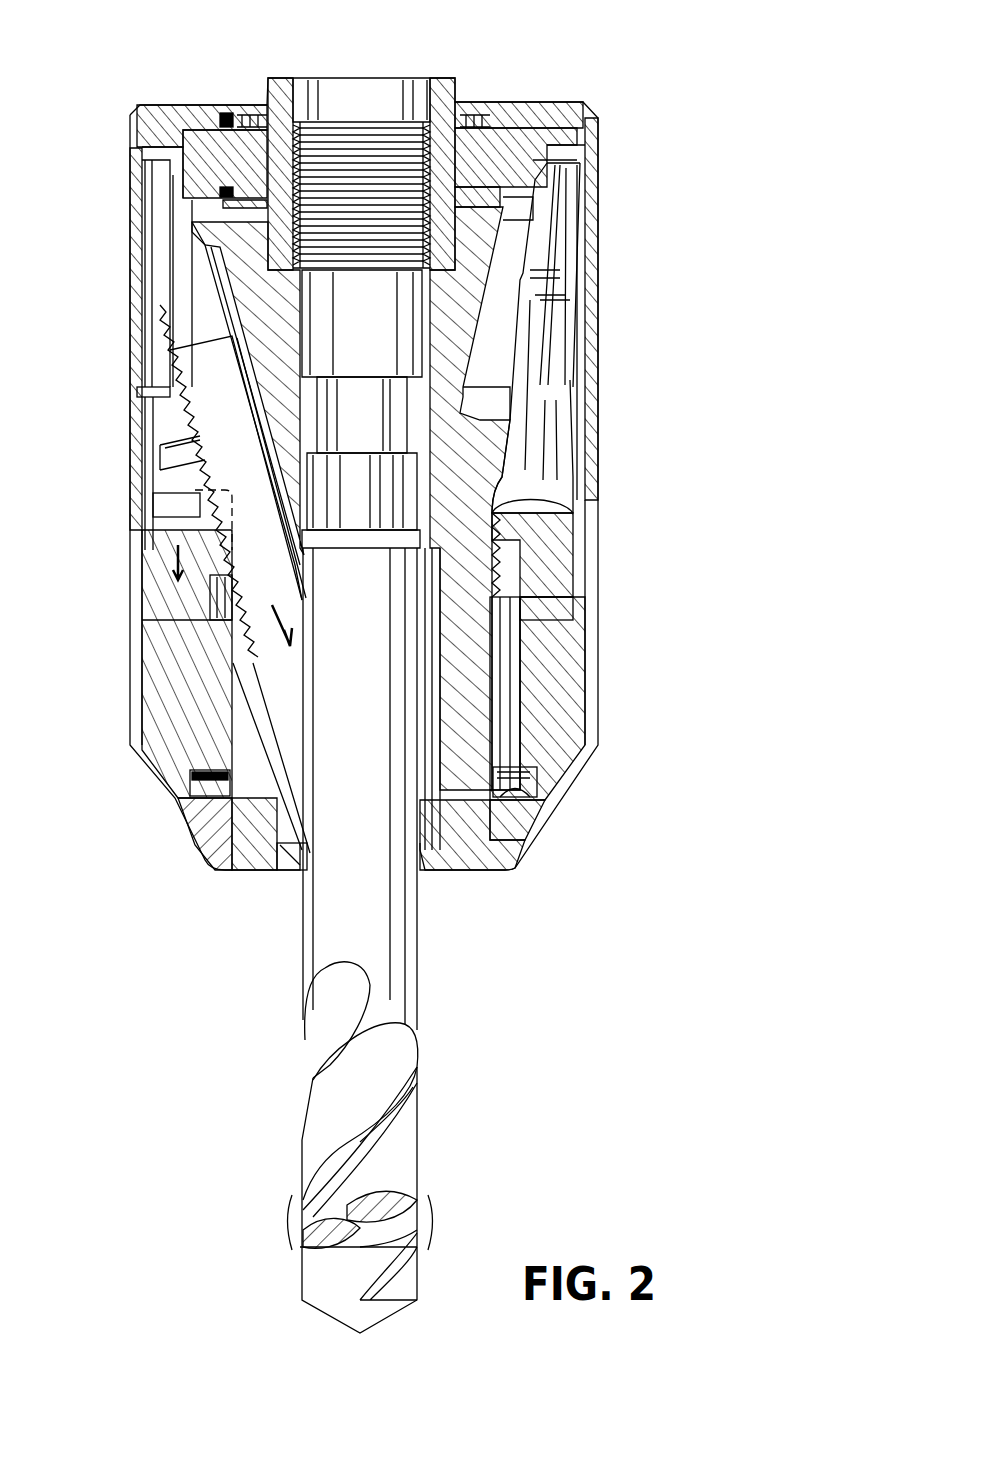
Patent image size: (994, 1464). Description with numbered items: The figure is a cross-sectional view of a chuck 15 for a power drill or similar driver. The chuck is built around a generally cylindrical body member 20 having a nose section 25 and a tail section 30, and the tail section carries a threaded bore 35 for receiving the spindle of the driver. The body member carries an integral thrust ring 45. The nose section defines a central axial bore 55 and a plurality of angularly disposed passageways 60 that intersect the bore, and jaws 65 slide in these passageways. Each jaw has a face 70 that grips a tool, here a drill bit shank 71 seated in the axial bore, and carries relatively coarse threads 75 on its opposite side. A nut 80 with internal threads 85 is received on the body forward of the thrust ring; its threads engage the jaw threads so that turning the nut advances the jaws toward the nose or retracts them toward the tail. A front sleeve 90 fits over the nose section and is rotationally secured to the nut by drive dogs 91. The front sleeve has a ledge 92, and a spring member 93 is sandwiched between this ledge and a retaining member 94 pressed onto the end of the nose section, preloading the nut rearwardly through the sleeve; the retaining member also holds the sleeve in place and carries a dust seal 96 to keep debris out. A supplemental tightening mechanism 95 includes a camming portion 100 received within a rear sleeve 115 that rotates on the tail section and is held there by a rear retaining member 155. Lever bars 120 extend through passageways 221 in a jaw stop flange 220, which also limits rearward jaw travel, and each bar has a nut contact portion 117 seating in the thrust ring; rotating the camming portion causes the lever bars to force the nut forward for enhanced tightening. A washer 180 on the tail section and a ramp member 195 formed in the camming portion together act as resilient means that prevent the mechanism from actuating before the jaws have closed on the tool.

The chuck 15 is at (693, 510).
The body member 20 is at (470, 630).
The nose section 25 is at (247, 830).
The tail section 30 is at (282, 100).
The threaded bore 35 is at (410, 140).
The thrust ring 45 is at (170, 468).
The axial bore 55 is at (433, 830).
The angularly disposed passageways 60 is at (250, 745).
The jaws 65 is at (280, 680).
The jaw face 70 is at (310, 730).
The drill bit shank 71 is at (388, 962).
The jaw threads 75 is at (178, 514).
The nut 80 is at (170, 580).
The internal threads 85 is at (226, 481).
The front sleeve 90 is at (596, 690).
The drive dogs 91 is at (548, 605).
The ledge 92 is at (535, 792).
The spring member 93 is at (545, 800).
The retaining member 94 is at (505, 845).
The supplemental tightening mechanism 95 is at (598, 105).
The dust seal 96 is at (292, 860).
The camming portion 100 is at (200, 130).
The rear sleeve 115 is at (140, 122).
The nut contact portion 117 is at (575, 468).
The lever bars 120 is at (545, 340).
The rear retaining member 155 is at (250, 112).
The washer 180 is at (478, 210).
The ramp member 195 is at (233, 128).
The jaw stop flange 220 is at (200, 233).
The passageways 221 is at (520, 238).